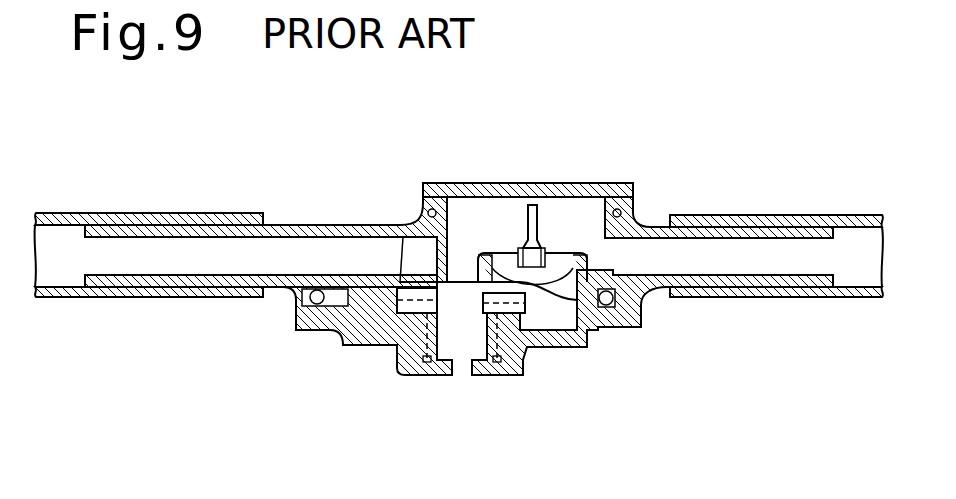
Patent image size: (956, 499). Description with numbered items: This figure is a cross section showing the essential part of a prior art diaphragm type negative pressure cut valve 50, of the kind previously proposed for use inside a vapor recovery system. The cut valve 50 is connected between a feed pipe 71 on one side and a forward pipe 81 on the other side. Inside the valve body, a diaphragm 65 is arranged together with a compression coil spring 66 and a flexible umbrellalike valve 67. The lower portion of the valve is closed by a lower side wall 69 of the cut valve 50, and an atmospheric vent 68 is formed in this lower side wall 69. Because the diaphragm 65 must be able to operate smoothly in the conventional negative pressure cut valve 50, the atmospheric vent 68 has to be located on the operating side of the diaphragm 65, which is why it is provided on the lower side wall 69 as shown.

The negative pressure cut valve 50 is at (627, 166).
The diaphragm 65 is at (410, 288).
The compression coil spring 66 is at (393, 340).
The flexible umbrellalike valve 67 is at (540, 218).
The atmospheric vent 68 is at (470, 366).
The lower side wall 69 is at (521, 370).
The feed pipe 71 is at (78, 218).
The forward pipe 81 is at (847, 218).